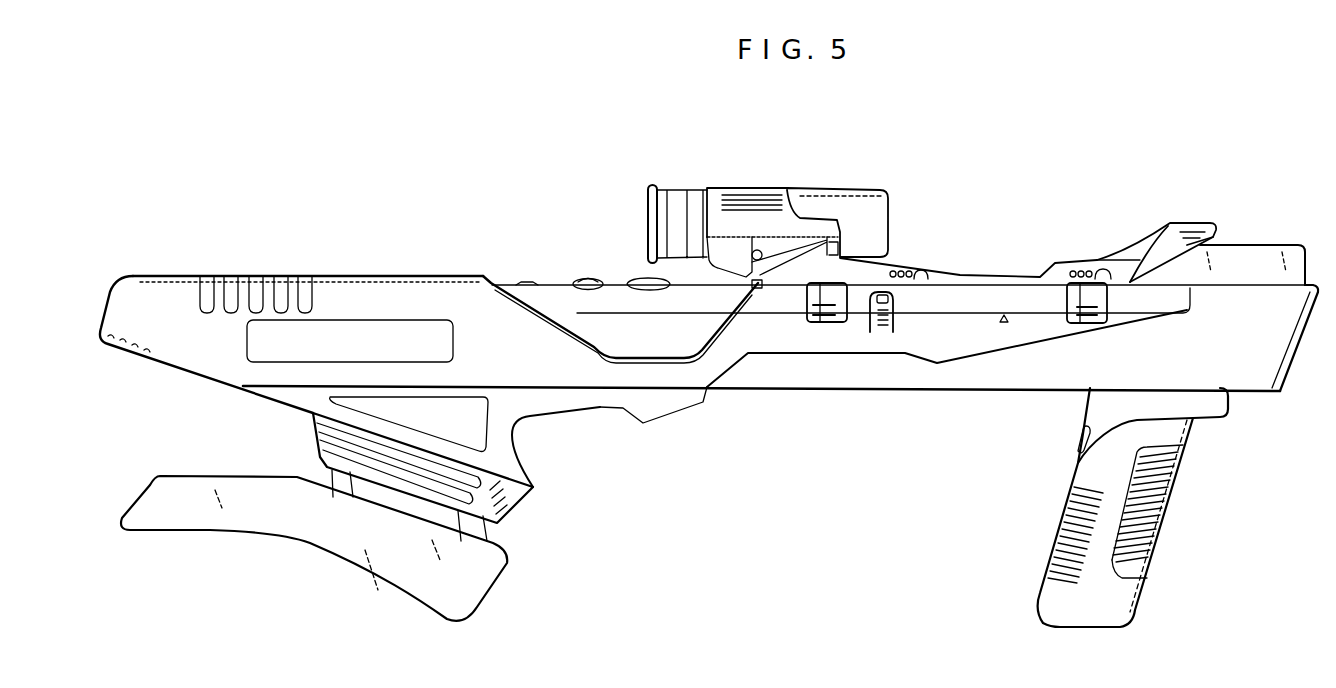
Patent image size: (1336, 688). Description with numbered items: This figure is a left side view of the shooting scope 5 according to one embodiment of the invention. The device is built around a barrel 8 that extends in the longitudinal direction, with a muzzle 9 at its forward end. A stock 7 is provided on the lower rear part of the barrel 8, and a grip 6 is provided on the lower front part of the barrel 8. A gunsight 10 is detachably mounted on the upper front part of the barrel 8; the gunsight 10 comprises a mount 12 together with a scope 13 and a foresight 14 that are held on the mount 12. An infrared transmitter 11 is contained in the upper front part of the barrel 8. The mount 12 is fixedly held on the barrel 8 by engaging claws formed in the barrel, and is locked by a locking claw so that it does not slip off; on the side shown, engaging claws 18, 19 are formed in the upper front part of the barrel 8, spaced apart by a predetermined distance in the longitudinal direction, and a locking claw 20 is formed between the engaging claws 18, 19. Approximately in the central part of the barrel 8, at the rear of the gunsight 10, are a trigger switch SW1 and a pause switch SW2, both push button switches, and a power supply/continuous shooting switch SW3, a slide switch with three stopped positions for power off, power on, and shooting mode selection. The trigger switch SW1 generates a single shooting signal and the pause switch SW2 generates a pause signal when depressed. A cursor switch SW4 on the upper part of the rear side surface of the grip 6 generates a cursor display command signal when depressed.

The toy gun / game controller 5 is at (438, 200).
The grip 6 is at (1050, 600).
The stock 7 is at (490, 562).
The barrel 8 is at (765, 380).
The muzzle 9 is at (1293, 370).
The gunsight 10 is at (884, 177).
The infrared transmitter 11 is at (1250, 257).
The mount 12 is at (938, 262).
The scope 13 is at (832, 200).
The foresight 14 is at (1186, 222).
The engaging claw 18 is at (1100, 313).
The engaging claw 19 is at (841, 324).
The locking claw 20 is at (882, 333).
The trigger switch SW1 is at (640, 278).
The pause switch SW2 is at (583, 278).
The power supply/continuous shooting switch SW3 is at (537, 280).
The cursor switch SW4 is at (1077, 440).